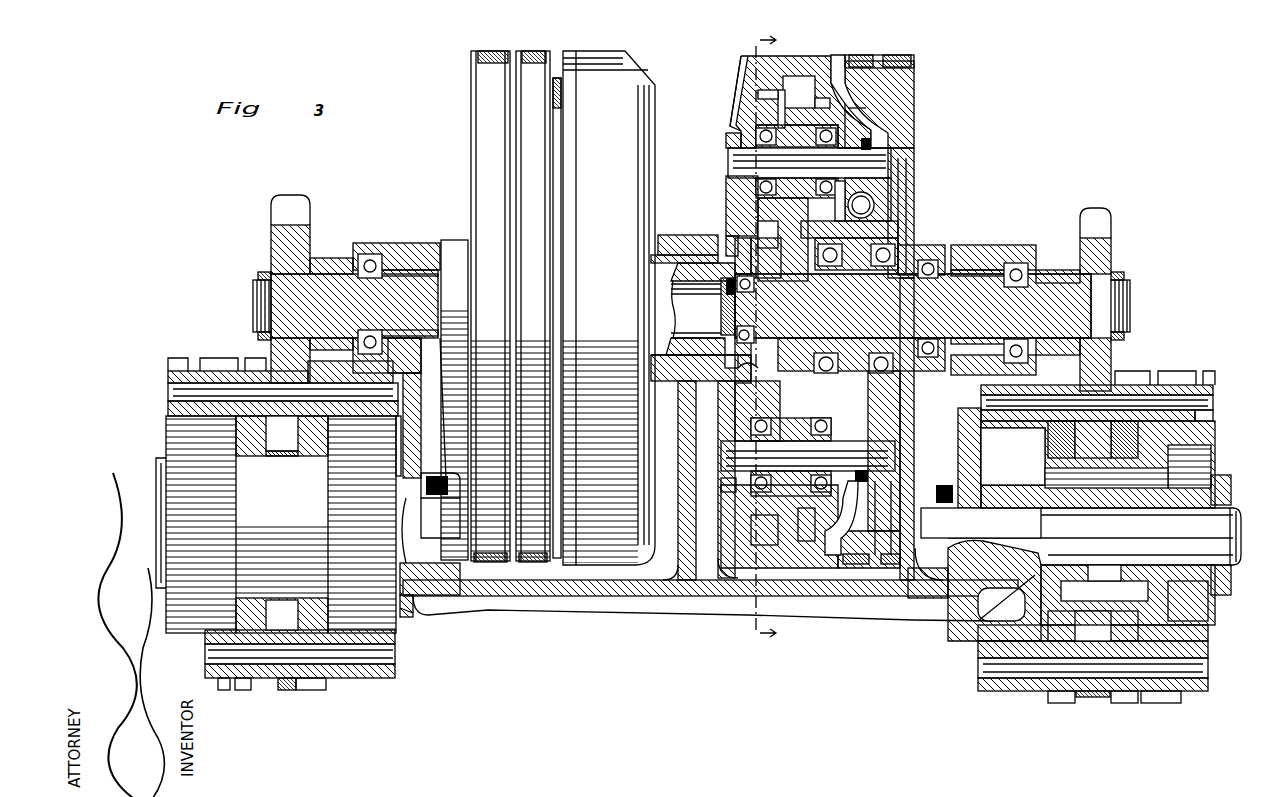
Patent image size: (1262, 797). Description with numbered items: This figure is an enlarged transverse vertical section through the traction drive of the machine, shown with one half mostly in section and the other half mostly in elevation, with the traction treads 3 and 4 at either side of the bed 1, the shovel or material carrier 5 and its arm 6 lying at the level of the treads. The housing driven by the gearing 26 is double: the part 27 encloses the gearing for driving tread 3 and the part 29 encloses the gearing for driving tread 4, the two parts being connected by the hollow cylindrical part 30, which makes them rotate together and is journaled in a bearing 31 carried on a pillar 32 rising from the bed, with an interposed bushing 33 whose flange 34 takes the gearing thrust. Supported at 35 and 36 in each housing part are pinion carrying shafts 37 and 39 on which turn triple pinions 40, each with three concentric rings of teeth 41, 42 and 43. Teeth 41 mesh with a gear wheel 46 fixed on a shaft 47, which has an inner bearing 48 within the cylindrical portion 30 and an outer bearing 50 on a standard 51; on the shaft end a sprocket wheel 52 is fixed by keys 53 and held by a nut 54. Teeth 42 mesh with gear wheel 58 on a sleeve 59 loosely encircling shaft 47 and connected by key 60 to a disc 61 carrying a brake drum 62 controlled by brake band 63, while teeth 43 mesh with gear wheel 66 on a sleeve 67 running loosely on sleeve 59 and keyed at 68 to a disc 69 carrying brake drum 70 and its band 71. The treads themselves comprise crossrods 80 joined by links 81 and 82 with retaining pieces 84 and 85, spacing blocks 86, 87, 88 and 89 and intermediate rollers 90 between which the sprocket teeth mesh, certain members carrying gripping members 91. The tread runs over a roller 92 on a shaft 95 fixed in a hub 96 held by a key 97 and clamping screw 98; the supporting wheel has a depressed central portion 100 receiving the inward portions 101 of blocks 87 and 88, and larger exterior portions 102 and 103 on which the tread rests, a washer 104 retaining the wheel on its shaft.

The body or bed 1 is at (614, 582).
The traction tread 3 is at (1170, 365).
The traction tread 4 is at (160, 352).
The shovel or material carrier 5 is at (759, 342).
The arm 6 is at (1210, 590).
The gearing 26 is at (722, 90).
The housing part 27 is at (766, 50).
The housing part 29 is at (598, 45).
The cylindrical part 30 is at (704, 227).
The bearing 31 is at (702, 247).
The pillar 32 is at (664, 574).
The bushing 33 is at (670, 227).
The flange 34 is at (655, 227).
The support 35 is at (718, 132).
The support 36 is at (866, 126).
The pinion carrying shaft 37 is at (905, 128).
The pinion carrying shaft 39 is at (872, 450).
The triple pinion 40 is at (862, 110).
The gear teeth 41 is at (755, 85).
The gear teeth 42 is at (790, 78).
The gear teeth 43 is at (818, 88).
The gear wheel 46 is at (740, 365).
The shaft 47 is at (367, 290).
The bearing 48 is at (713, 325).
The bearing 50 is at (395, 238).
The standard 51 is at (968, 455).
The sprocket wheel 52 is at (302, 240).
The key 53 is at (302, 260).
The nut 54 is at (256, 268).
The gear wheel 58 is at (772, 250).
The sleeve 59 is at (838, 335).
The key 60 is at (912, 237).
The disc 61 is at (900, 165).
The brake drum 62 is at (478, 80).
The brake band 63 is at (480, 43).
The gear wheel 66 is at (830, 212).
The sleeve 67 is at (890, 202).
The key 68 is at (880, 217).
The disc 69 is at (880, 153).
The brake drum 70 is at (515, 96).
The brake band 71 is at (535, 43).
The crossrod 80 is at (160, 385).
The link 81 is at (160, 370).
The link 82 is at (436, 410).
The retaining piece 84 is at (160, 400).
The retaining piece 85 is at (413, 383).
The spacing block or link 86 is at (200, 350).
The spacing block or link 87 is at (258, 353).
The spacing block or link 88 is at (305, 360).
The spacing block or link 89 is at (347, 428).
The spacing roller 90 is at (1088, 689).
The ground gripping member 91 is at (214, 682).
The guiding and supporting roller 92 is at (388, 628).
The shaft 95 is at (400, 500).
The hub 96 is at (413, 478).
The key 97 is at (452, 560).
The clamping screw 98 is at (430, 466).
The depressed central cylindrical portion 100 is at (255, 470).
The inwardly extending portion 101 is at (687, 528).
The exterior portion 102 is at (176, 447).
The exterior portion 103 is at (406, 602).
The washer 104 is at (1215, 467).